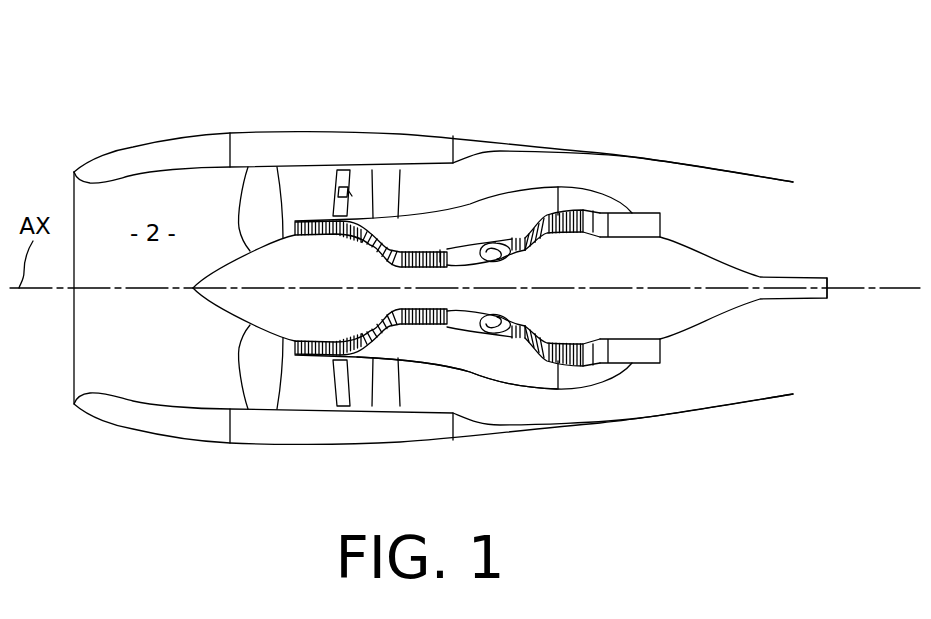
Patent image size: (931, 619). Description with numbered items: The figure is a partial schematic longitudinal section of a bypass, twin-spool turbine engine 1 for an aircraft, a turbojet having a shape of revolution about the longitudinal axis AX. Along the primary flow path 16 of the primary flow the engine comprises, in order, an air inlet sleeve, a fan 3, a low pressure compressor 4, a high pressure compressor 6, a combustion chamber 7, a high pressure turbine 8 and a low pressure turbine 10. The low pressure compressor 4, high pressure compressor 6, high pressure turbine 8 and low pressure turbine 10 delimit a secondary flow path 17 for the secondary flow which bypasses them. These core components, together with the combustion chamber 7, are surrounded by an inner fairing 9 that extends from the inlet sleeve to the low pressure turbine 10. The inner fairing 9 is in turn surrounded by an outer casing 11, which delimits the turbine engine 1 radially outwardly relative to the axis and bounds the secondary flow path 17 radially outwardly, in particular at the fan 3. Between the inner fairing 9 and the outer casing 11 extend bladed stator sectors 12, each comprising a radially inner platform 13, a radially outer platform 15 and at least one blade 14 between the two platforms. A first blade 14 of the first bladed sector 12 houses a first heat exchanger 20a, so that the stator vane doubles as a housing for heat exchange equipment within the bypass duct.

The turbine engine 1 is at (235, 92).
The fan 3 is at (253, 358).
The low pressure compressor 4 is at (327, 190).
The high pressure compressor 6 is at (433, 250).
The combustion chamber 7 is at (490, 240).
The high pressure turbine 8 is at (537, 220).
The inner fairing 9 is at (547, 197).
The low pressure turbine 10 is at (585, 212).
The outer casing 11 is at (353, 174).
The bladed sector 12 is at (318, 222).
The radially inner platform 13 is at (320, 230).
The blade 14 is at (374, 167).
The radially outer platform 15 is at (344, 167).
The primary flow path 16 is at (467, 257).
The secondary flow path 17 is at (495, 398).
The first heat exchanger 20a is at (352, 196).